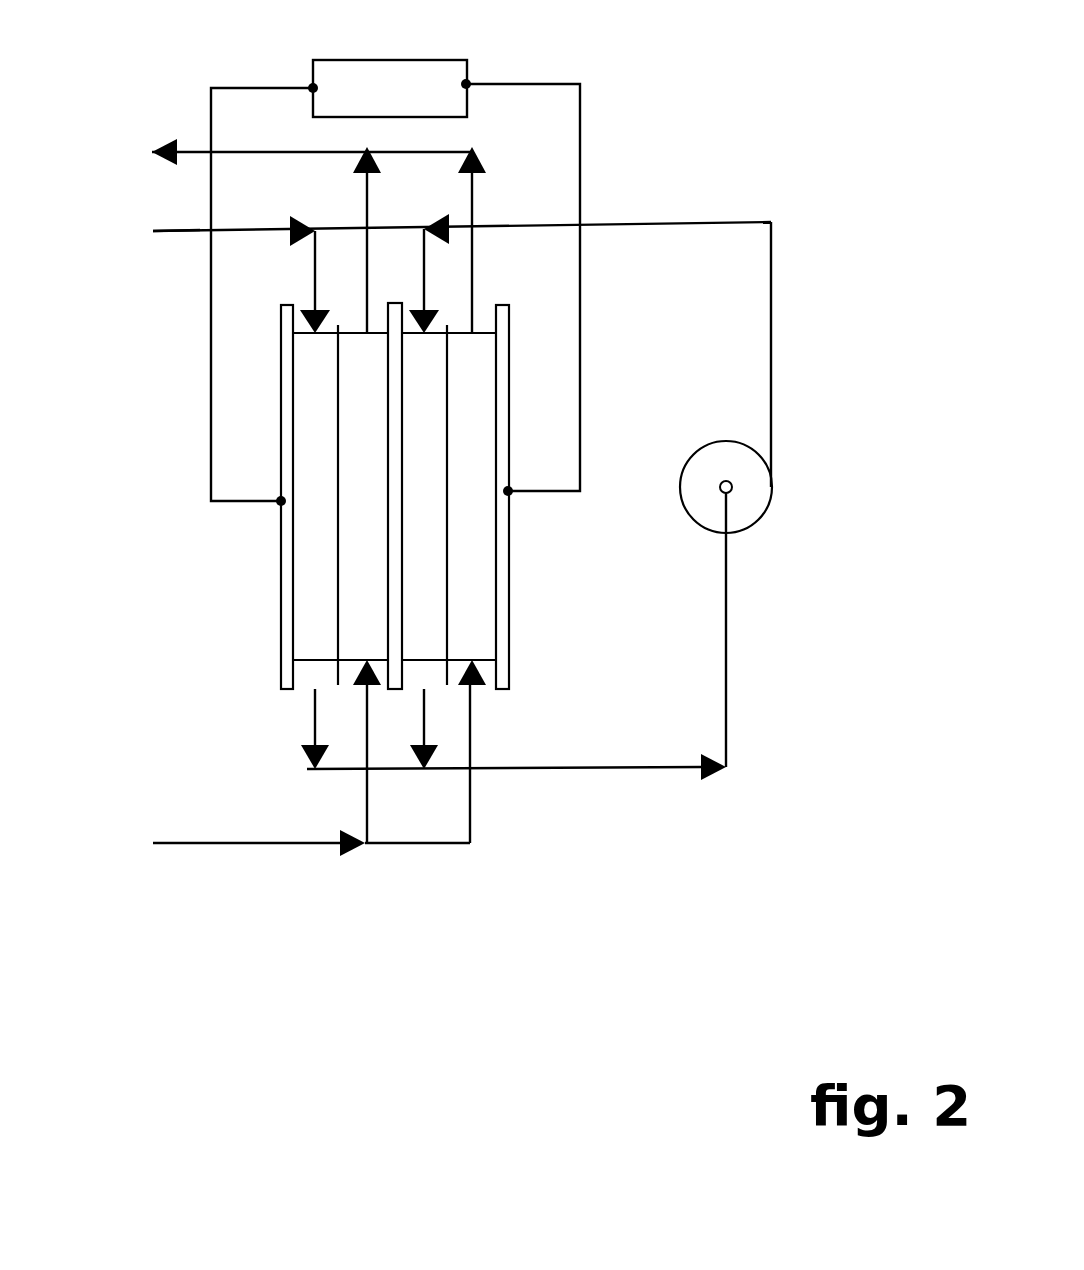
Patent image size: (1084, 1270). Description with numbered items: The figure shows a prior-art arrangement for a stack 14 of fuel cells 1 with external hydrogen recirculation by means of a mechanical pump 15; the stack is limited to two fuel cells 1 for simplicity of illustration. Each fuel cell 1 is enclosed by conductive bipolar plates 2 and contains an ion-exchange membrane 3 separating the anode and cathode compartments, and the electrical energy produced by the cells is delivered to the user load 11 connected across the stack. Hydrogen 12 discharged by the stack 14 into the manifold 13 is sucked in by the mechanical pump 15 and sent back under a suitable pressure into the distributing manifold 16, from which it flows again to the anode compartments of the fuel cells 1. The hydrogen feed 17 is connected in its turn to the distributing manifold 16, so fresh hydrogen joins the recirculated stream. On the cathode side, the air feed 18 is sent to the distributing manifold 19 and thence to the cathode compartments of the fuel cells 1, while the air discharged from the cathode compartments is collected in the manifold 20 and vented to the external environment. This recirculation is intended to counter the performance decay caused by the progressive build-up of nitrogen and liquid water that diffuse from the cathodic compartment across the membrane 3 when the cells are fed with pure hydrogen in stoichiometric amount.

The fuel cell 1 is at (318, 532).
The conductive bipolar plate 2 is at (287, 608).
The ion-exchange membrane 3 is at (338, 322).
The user load 11 is at (400, 80).
The hydrogen 12 is at (573, 762).
The manifold 13 is at (397, 775).
The stack 14 is at (271, 525).
The mechanical pump 15 is at (780, 489).
The distributing manifold 16 is at (338, 222).
The hydrogen feed 17 is at (178, 236).
The air feed 18 is at (266, 850).
The distributing manifold 19 is at (391, 850).
The manifold 20 is at (417, 154).